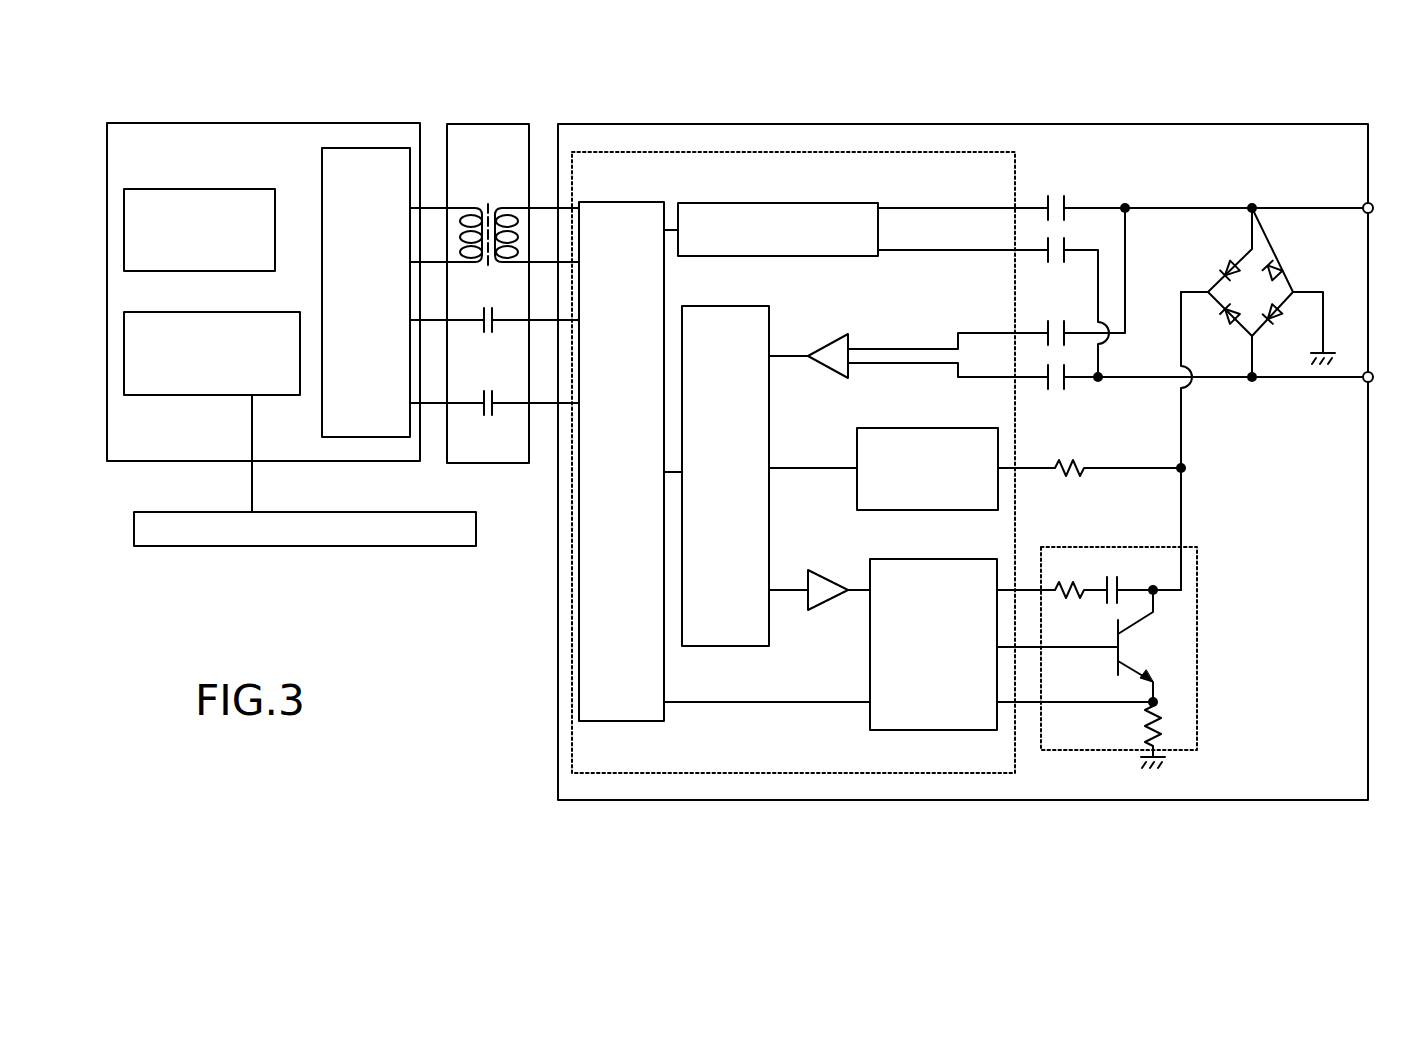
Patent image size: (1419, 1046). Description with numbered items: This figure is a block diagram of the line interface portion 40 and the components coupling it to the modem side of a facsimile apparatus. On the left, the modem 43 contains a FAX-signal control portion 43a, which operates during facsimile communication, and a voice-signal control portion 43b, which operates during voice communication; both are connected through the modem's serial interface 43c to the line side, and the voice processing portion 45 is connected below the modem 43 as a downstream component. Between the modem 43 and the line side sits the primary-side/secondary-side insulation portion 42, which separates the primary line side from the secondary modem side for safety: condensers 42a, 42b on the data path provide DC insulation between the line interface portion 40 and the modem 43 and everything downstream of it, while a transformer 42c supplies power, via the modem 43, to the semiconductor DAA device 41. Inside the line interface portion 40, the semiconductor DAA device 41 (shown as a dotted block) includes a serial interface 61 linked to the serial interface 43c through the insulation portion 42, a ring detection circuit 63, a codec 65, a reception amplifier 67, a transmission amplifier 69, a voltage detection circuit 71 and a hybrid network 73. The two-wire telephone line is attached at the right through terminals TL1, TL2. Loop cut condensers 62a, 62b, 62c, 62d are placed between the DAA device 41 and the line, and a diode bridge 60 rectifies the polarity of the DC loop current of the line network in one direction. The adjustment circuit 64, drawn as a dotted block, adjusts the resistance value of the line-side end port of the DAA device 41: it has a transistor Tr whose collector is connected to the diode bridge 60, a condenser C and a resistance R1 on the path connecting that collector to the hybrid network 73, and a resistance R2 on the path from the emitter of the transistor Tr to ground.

The line interface portion 40 is at (1240, 124).
The semiconductor DAA device 41 is at (910, 153).
The primary-side/secondary-side insulation portion 42 is at (508, 124).
The condenser 42a is at (478, 313).
The condenser 42b is at (478, 397).
The transformer 42c is at (482, 200).
The modem 43 is at (298, 123).
The FAX-signal control portion 43a is at (242, 189).
The voice-signal control portion 43b is at (246, 312).
The serial interface 43c is at (390, 148).
The voice processing portion 45 is at (357, 512).
The diode bridge 60 is at (1287, 265).
The serial interface 61 is at (603, 202).
The loop cut condenser 62a is at (1042, 202).
The loop cut condenser 62b is at (1065, 245).
The loop cut condenser 62c is at (1042, 327).
The loop cut condenser 62d is at (1040, 390).
The ring detection circuit 63 is at (725, 203).
The adjustment circuit 64 is at (1197, 665).
The codec 65 is at (713, 306).
The reception amplifier 67 is at (845, 340).
The transmission amplifier 69 is at (812, 575).
The voltage detection circuit 71 is at (933, 428).
The hybrid network 73 is at (933, 559).
The resistance R1 is at (1067, 563).
The resistance R2 is at (1133, 726).
The condenser C is at (1120, 585).
The transistor Tr is at (1153, 648).
The terminal TL1 is at (1374, 211).
The terminal TL2 is at (1374, 380).